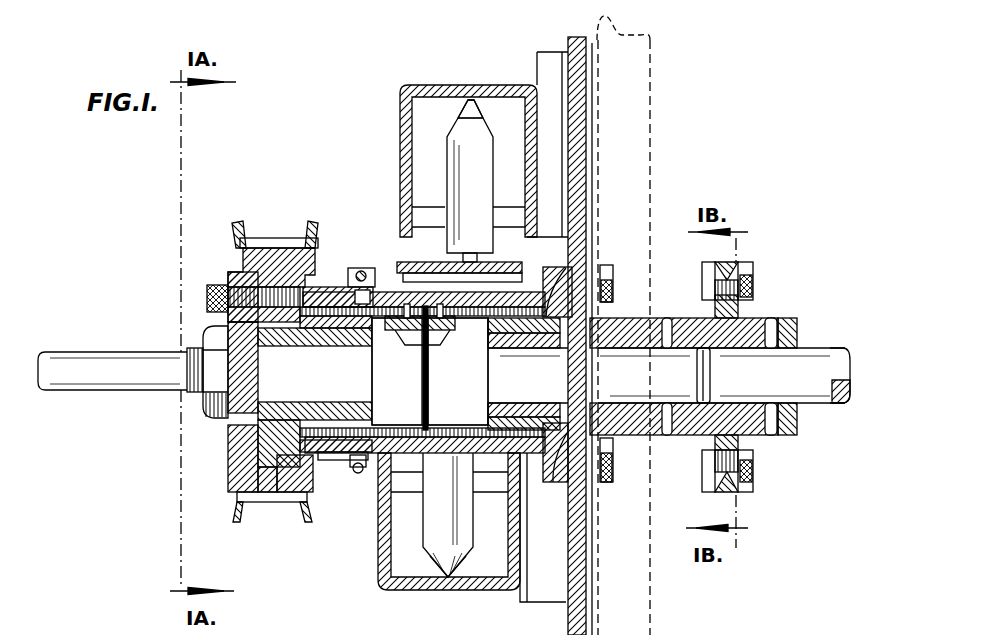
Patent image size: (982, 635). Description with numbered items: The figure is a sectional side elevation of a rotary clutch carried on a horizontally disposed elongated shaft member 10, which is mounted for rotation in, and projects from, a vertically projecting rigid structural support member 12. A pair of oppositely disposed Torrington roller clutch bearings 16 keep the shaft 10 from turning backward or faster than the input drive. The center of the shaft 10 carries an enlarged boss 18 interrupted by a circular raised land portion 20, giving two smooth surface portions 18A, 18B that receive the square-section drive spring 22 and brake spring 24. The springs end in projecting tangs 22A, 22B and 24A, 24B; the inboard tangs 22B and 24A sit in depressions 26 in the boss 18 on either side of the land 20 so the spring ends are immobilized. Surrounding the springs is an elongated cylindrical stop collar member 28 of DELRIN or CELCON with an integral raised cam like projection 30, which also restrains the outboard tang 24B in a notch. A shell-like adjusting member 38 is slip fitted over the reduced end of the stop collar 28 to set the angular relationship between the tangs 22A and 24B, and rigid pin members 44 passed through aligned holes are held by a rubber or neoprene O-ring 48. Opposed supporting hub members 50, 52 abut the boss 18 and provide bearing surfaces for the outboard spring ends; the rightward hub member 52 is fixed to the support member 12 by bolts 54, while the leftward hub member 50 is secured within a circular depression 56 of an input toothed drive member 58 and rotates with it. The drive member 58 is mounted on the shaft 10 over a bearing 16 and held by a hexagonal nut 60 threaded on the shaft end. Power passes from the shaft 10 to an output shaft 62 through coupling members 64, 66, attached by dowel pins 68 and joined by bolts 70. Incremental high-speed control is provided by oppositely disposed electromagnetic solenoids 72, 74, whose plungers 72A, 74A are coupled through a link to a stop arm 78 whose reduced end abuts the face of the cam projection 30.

The shaft member 10 is at (573, 389).
The structural support member 12 is at (592, 42).
The roller clutch bearing 16 is at (295, 410).
The boss 18 is at (443, 383).
The smooth surface portion 18A is at (373, 395).
The smooth surface portion 18B is at (437, 395).
The raised land portion 20 is at (373, 362).
The drive spring 22 is at (528, 463).
The outboard tang 22A is at (323, 307).
The inboard tang 22B is at (353, 300).
The brake spring 24 is at (295, 458).
The inboard tang 24A is at (447, 313).
The outboard tang 24B is at (567, 270).
The depression 26 is at (447, 320).
The stop collar member 28 is at (457, 337).
The cam like projection 30 is at (513, 290).
The adjusting member 38 is at (327, 457).
The pin member 44 is at (345, 462).
The O-ring 48 is at (361, 474).
The hub member 50 is at (268, 440).
The hub member 52 is at (567, 435).
The bolt 54 is at (605, 268).
The circular depression 56 is at (273, 277).
The input toothed drive member 58 is at (240, 265).
The hexagonal nut 60 is at (218, 338).
The output shaft 62 is at (773, 375).
The coupling member 64 is at (685, 436).
The coupling member 66 is at (795, 430).
The dowel pin 68 is at (666, 318).
The bolt 70 is at (747, 273).
The electromagnetic solenoid 72 is at (453, 519).
The plunger 72A is at (438, 546).
The electromagnetic solenoid 74 is at (468, 232).
The plunger 74A is at (465, 125).
The stop arm 78 is at (502, 266).